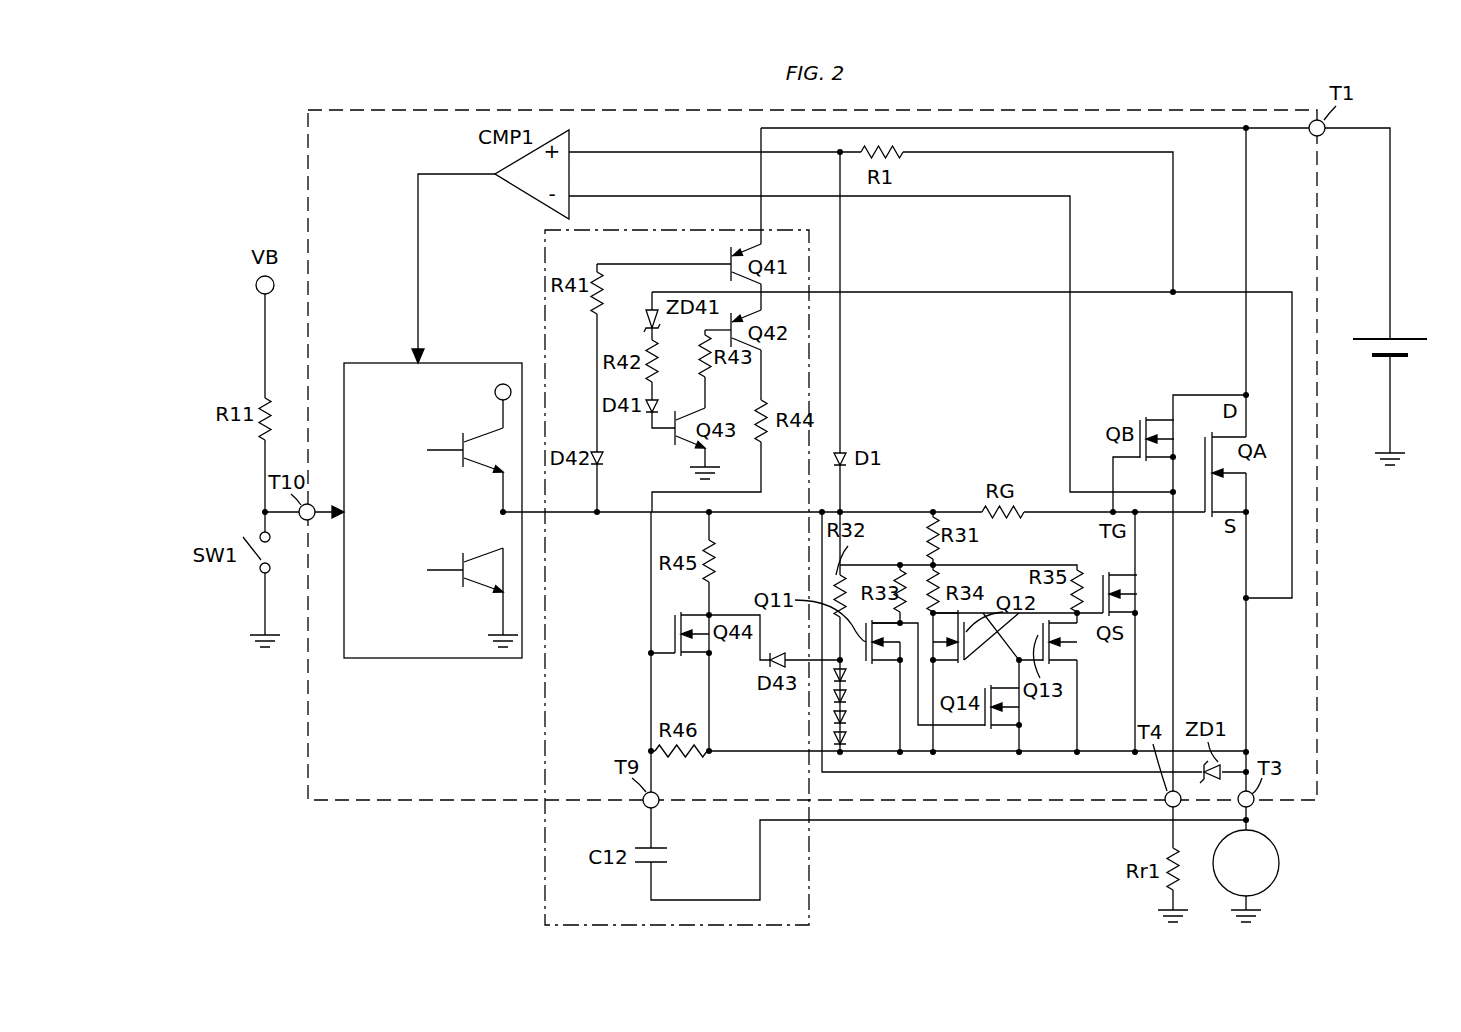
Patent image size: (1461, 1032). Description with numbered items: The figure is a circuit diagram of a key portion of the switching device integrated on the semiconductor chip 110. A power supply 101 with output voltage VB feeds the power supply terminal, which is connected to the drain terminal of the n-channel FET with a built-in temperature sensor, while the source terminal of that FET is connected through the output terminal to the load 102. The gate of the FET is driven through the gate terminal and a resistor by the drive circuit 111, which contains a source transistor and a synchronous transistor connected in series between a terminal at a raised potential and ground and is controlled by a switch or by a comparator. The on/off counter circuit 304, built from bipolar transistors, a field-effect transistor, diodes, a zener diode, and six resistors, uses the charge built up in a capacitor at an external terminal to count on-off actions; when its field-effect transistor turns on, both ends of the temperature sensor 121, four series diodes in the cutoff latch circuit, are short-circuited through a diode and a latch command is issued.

The semiconductor chip 110 is at (362, 110).
The drive circuit 111 is at (475, 363).
The temperature sensor 121 is at (850, 667).
The power supply 101 is at (1376, 338).
The load 102 is at (1280, 862).
The on/off counter circuit 304 is at (545, 885).